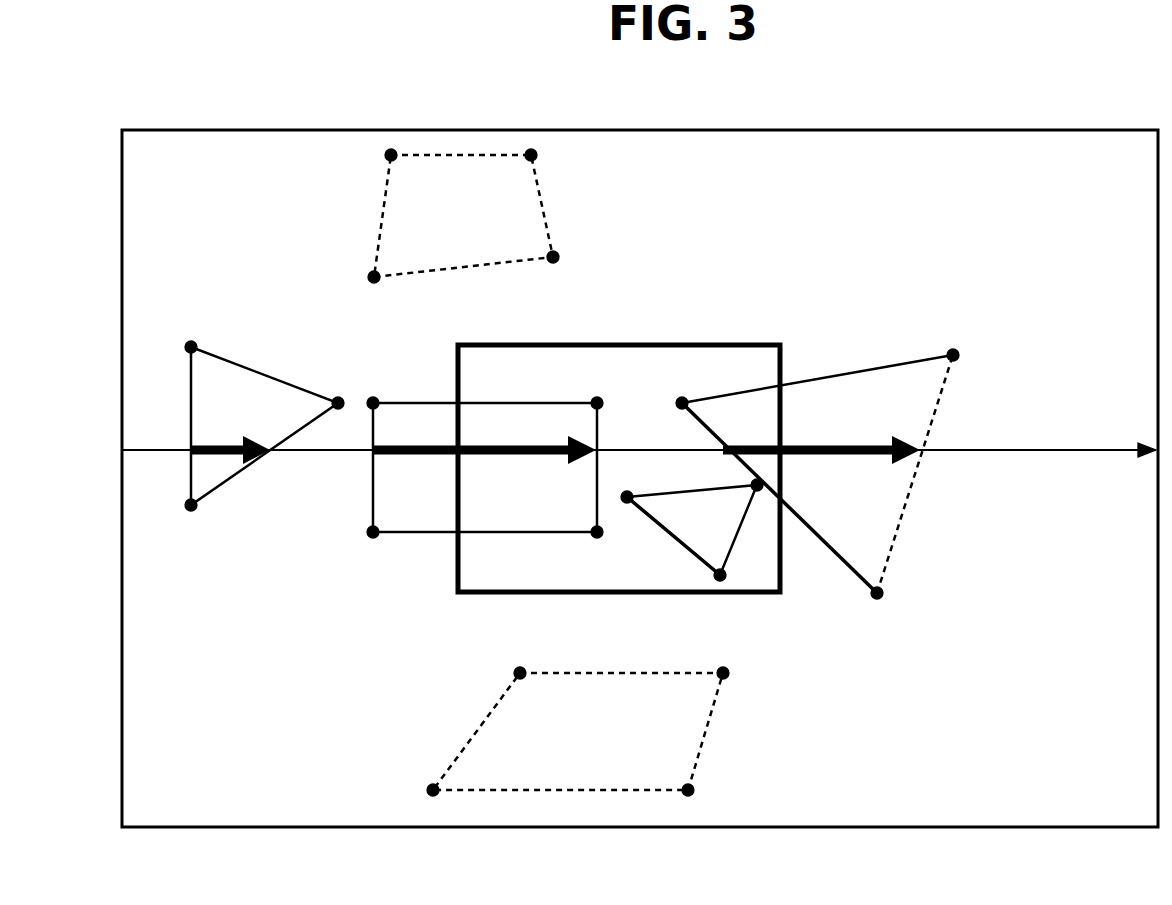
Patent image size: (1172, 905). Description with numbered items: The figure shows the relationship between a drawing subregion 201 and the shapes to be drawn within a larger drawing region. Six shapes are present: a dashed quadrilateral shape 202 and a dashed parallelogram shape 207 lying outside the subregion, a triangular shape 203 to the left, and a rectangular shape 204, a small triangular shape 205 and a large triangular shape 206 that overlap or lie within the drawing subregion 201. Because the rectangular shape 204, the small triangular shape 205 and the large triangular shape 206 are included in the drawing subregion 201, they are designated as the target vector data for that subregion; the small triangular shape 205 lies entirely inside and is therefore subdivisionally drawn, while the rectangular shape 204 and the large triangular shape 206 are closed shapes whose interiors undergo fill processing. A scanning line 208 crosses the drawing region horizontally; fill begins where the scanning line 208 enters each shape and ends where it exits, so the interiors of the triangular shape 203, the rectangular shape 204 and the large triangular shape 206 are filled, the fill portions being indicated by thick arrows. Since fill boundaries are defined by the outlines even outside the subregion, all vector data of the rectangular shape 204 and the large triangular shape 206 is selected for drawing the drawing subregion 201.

The drawing subregion 201 is at (583, 327).
The figure 202 is at (520, 210).
The figure 203 is at (238, 387).
The figure 204 is at (423, 507).
The figure 205 is at (743, 527).
The figure 206 is at (873, 377).
The figure 207 is at (500, 738).
The scanning line 208 is at (1044, 403).